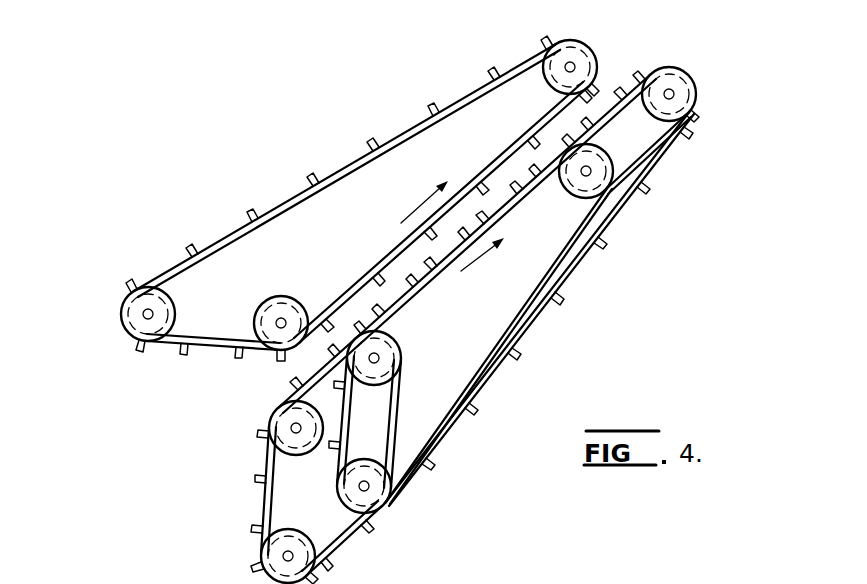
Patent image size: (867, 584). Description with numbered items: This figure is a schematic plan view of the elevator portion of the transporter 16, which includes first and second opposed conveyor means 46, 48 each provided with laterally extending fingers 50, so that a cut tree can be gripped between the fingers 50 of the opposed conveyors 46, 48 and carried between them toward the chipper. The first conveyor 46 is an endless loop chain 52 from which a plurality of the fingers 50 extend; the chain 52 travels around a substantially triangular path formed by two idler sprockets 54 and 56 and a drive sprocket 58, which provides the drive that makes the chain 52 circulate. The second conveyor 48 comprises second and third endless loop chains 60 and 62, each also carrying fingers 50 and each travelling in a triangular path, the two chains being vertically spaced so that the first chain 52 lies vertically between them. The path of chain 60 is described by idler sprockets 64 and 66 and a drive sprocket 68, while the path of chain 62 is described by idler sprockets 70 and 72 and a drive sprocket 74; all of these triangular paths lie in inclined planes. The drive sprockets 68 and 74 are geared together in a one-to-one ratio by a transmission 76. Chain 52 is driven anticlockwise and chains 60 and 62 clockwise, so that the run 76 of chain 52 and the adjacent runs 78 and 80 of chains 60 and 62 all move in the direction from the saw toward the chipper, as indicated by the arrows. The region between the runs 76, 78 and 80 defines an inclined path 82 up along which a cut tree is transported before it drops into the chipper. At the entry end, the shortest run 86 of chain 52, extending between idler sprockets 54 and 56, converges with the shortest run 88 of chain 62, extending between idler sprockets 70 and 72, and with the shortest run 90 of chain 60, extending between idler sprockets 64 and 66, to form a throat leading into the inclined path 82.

The transporter 16 is at (208, 195).
The first conveyor 46 is at (110, 355).
The second conveyor 48 is at (185, 542).
The fingers 50 is at (427, 105).
The endless loop chain 52 is at (287, 195).
The idler sprocket 54 is at (152, 300).
The idler sprocket 56 is at (274, 312).
The drive sprocket 58 is at (578, 60).
The second endless loop chain 60 is at (455, 418).
The third endless loop chain 62 is at (327, 547).
The idler sprocket 64 is at (395, 490).
The idler sprocket 66 is at (392, 357).
The drive sprocket 68 is at (676, 75).
The idler sprocket 70 is at (264, 426).
The idler sprocket 72 is at (262, 548).
The drive sprocket 74 is at (608, 219).
The run 76 is at (497, 163).
The run 78 is at (517, 203).
The run 80 is at (307, 373).
The inclined path 82 is at (397, 249).
The shortest run 86 is at (192, 344).
The shortest run 88 is at (262, 462).
The shortest run 90 is at (350, 417).